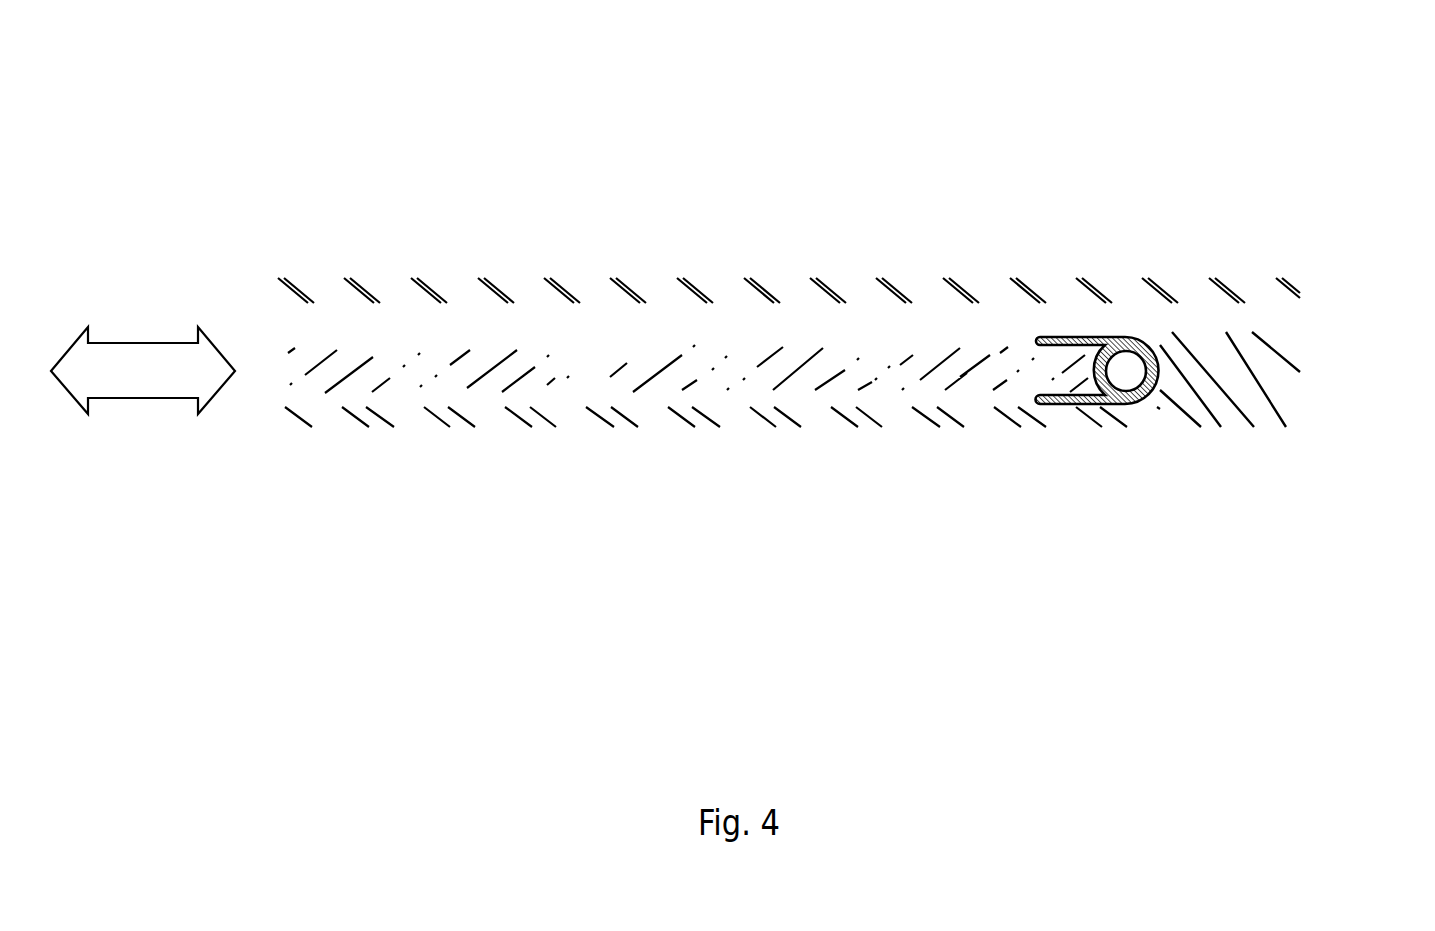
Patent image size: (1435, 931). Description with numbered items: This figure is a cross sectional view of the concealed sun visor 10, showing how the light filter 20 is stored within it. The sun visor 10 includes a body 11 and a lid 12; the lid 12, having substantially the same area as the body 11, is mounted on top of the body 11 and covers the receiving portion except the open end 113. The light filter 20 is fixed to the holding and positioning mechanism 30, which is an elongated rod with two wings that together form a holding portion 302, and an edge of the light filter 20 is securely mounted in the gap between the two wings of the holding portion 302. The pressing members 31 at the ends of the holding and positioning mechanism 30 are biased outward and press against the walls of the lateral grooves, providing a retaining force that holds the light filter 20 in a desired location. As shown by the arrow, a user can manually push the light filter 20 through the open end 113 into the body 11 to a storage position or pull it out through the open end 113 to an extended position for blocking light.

The sun visor 10 is at (870, 200).
The body 11 is at (1282, 404).
The lid 12 is at (653, 290).
The open end 113 is at (412, 420).
The light filter 20 is at (542, 378).
The holding and positioning mechanism 30 is at (1128, 373).
The holding portion 302 is at (1075, 337).
The pressing member 31 is at (1125, 375).